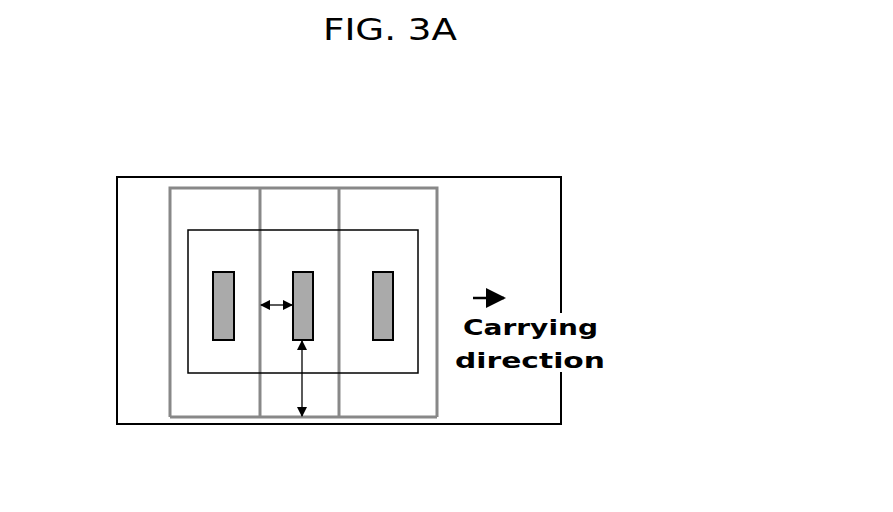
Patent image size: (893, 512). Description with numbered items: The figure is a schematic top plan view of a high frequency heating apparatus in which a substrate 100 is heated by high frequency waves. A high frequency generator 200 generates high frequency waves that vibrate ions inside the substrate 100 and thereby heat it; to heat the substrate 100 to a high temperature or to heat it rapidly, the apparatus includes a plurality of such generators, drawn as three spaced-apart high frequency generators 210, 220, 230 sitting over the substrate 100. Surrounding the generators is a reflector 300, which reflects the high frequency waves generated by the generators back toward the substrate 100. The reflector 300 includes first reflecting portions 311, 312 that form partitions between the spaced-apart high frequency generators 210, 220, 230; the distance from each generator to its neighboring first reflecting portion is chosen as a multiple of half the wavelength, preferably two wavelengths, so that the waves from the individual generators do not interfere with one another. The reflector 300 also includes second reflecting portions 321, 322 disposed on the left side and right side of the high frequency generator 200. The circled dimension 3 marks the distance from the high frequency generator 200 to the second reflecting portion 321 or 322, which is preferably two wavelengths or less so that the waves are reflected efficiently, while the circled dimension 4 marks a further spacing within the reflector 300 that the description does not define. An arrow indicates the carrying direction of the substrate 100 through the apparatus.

The substrate 100 is at (188, 307).
The high frequency generator 200 is at (326, 210).
The high frequency generator 210 is at (224, 272).
The high frequency generator 220 is at (303, 272).
The high frequency generator 230 is at (383, 272).
The reflector 300 is at (450, 304).
The first reflecting portion 311 is at (258, 417).
The first reflecting portion 312 is at (337, 417).
The second reflecting portion 321 is at (188, 188).
The second reflecting portion 322 is at (182, 417).
The distance from high frequency generator to second reflector 3 is at (276, 292).
The height dimension 4 is at (314, 378).